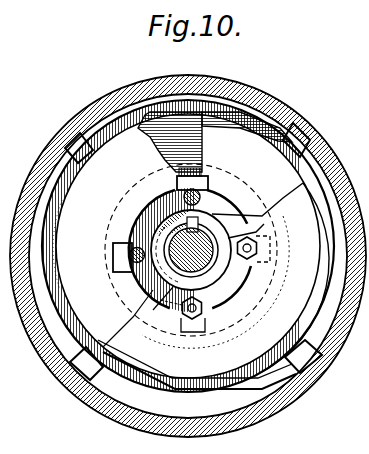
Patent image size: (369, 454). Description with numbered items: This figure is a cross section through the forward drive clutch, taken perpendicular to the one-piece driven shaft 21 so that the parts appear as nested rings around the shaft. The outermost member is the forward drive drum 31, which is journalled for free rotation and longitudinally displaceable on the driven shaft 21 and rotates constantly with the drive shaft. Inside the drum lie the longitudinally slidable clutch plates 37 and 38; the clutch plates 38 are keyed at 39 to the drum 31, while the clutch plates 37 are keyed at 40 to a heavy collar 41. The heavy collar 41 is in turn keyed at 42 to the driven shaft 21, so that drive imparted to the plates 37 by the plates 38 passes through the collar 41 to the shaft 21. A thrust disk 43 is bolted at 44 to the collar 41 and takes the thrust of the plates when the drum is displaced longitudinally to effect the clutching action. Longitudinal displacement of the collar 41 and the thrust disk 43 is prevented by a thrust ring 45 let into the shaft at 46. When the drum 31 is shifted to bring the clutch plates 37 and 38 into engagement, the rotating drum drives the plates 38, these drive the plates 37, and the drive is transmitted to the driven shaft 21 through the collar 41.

The driven shaft 21 is at (191, 253).
The forward drive drum 31 is at (150, 82).
The clutch plates 37 is at (174, 250).
The clutch plates 38 is at (188, 122).
The key 39 is at (75, 146).
The key 40 is at (206, 178).
The heavy collar 41 is at (232, 192).
The key 42 is at (222, 228).
The thrust disk 43 is at (295, 277).
The bolts 44 is at (262, 236).
The thrust ring 45 is at (172, 303).
The groove 46 is at (165, 240).